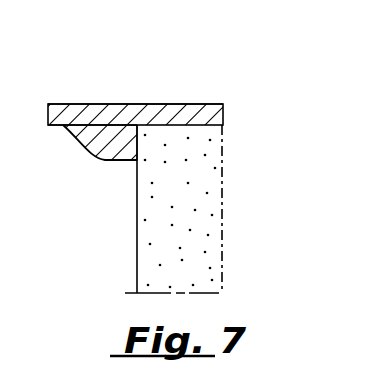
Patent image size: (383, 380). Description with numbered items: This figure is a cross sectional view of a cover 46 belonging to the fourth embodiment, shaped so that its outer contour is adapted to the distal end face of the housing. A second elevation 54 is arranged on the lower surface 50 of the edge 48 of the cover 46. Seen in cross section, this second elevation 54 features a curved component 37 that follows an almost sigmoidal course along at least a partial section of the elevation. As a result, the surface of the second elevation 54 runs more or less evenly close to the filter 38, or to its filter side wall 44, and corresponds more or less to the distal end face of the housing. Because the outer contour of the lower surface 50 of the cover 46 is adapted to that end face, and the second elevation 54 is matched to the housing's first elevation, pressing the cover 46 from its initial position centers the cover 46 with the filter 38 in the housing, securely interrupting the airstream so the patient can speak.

The curved component 37 is at (81, 146).
The filter 38 is at (205, 206).
The filter side wall 44 is at (130, 274).
The cover 46 is at (151, 104).
The edge 48 is at (62, 102).
The lower surface 50 is at (62, 128).
The second elevation 54 is at (122, 150).